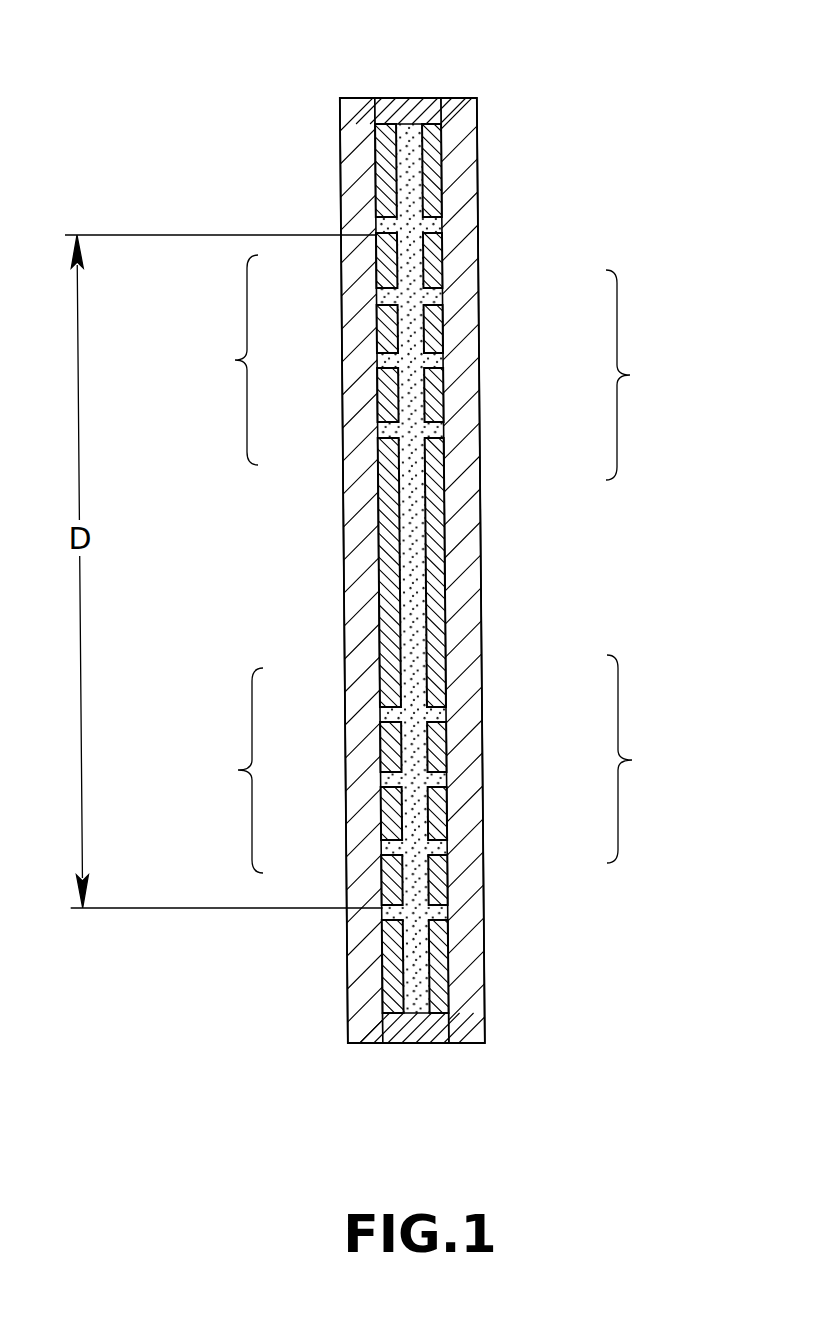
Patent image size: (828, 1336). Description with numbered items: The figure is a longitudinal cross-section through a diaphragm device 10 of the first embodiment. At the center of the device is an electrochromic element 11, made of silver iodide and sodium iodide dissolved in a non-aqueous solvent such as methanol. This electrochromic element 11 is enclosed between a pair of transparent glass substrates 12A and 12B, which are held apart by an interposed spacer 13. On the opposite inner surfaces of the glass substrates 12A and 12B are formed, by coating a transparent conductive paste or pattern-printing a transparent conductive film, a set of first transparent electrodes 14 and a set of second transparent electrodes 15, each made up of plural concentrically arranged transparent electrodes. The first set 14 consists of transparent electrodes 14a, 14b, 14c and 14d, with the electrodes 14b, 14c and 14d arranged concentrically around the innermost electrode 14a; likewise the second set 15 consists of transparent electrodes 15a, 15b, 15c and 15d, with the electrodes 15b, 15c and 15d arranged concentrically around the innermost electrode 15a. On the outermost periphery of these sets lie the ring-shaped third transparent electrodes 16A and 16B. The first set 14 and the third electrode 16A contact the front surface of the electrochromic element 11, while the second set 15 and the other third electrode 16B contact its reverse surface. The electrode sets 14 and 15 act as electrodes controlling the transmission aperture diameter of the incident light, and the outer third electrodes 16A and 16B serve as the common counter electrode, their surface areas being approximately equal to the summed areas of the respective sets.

The diaphragm device 10 is at (497, 92).
The electrochromic element 11 is at (415, 580).
The transparent glass substrate 12A is at (372, 1044).
The transparent glass substrate 12B is at (478, 1044).
The spacer 13 is at (411, 98).
The set of first transparent electrodes 14 is at (192, 377).
The innermost transparent electrode 14a is at (387, 482).
The transparent electrode 14b is at (386, 400).
The transparent electrode 14c is at (386, 340).
The transparent electrode 14d is at (385, 268).
The set of second transparent electrodes 15 is at (643, 392).
The innermost transparent electrode 15a is at (433, 513).
The transparent electrode 15b is at (435, 404).
The transparent electrode 15c is at (433, 335).
The transparent electrode 15d is at (433, 267).
The ring-shaped third transparent electrode 16A is at (385, 177).
The ring-shaped third transparent electrode 16B is at (437, 176).